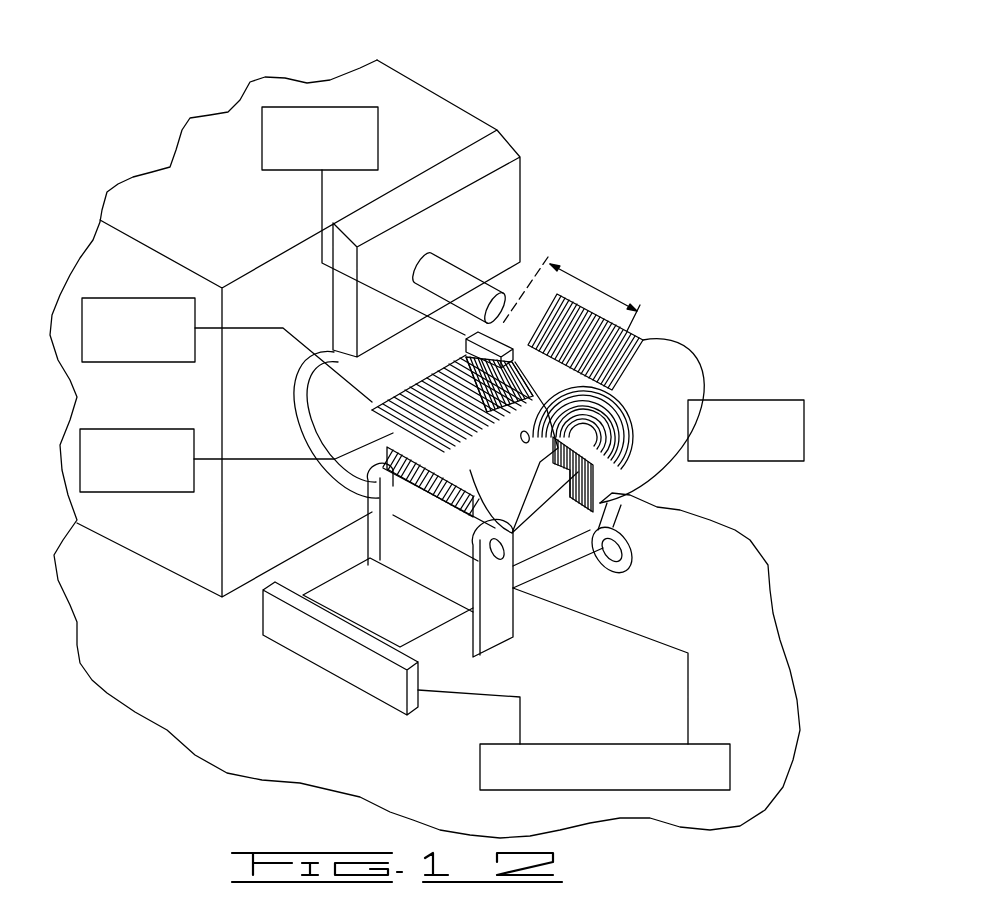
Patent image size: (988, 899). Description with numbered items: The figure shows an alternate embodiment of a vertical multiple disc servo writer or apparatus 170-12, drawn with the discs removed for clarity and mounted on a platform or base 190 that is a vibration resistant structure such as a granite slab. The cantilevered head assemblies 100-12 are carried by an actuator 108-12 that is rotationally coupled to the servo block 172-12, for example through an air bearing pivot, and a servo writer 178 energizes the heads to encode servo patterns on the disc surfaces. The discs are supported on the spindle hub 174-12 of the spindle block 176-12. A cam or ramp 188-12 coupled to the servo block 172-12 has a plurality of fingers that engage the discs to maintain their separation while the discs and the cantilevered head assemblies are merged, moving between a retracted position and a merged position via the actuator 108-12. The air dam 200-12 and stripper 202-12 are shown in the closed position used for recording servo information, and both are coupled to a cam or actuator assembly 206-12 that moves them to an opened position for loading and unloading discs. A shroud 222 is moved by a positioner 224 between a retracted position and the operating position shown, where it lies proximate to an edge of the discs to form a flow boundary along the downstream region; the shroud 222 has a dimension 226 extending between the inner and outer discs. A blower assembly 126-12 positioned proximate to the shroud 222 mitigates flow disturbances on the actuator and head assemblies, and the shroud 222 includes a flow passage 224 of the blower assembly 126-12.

The positioner 224 is at (316, 107).
The servo block 172-12 is at (432, 116).
The vertical multiple disc servo writer apparatus 170-12 is at (626, 170).
The cam or ramp 188-12 is at (465, 278).
The dimension 226 is at (572, 274).
The air dam 200-12 is at (650, 350).
The cantilevered head assemblies 100-12 is at (600, 387).
The servo writer 178 is at (157, 298).
The actuator 108-12 is at (368, 408).
The shroud 222 is at (457, 362).
The spindle block 176-12 is at (740, 461).
The spindle hub 174-12 is at (598, 430).
The blower assembly 126-12 is at (128, 492).
The platform or base 190 is at (215, 684).
The stripper 202-12 is at (612, 578).
The cam or actuator assembly 206-12 is at (480, 772).